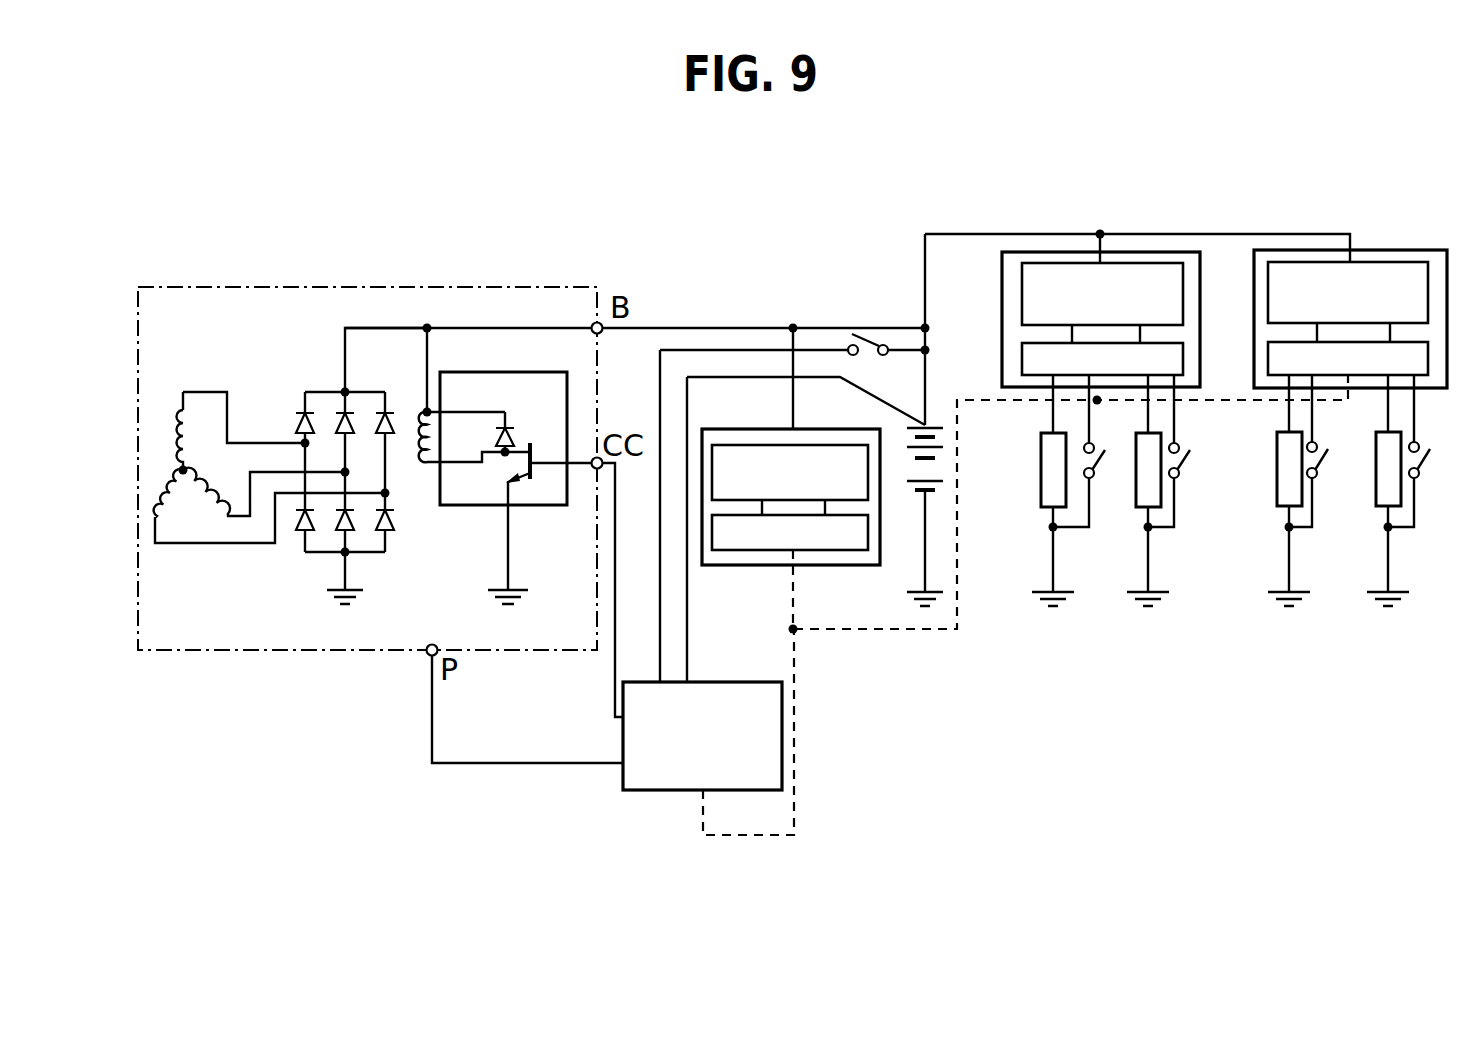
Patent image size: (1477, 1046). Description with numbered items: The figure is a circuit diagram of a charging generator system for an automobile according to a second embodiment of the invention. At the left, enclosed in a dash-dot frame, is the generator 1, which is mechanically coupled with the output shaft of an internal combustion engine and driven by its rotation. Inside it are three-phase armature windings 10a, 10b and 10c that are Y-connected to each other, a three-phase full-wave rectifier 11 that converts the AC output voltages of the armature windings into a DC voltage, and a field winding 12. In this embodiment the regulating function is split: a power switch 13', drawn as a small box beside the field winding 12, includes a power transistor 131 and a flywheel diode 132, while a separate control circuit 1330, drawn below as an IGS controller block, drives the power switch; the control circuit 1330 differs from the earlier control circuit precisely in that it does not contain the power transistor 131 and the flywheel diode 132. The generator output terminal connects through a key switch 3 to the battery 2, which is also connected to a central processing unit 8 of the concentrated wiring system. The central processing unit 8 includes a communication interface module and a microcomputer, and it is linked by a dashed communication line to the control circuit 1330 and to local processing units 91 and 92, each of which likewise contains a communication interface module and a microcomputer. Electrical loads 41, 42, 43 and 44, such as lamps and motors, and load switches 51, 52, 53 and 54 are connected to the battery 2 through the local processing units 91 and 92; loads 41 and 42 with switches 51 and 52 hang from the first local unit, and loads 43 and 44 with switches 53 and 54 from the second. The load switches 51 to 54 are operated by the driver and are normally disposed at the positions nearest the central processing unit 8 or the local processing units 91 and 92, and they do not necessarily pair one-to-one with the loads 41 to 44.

The generator 1 is at (270, 651).
The armature winding 10a is at (180, 510).
The armature winding 10b is at (215, 516).
The armature winding 10c is at (198, 422).
The three-phase full-wave rectifier 11 is at (386, 552).
The field winding 12 is at (412, 436).
The power switch 13' is at (503, 475).
The power transistor 131 is at (511, 466).
The flywheel diode 132 is at (512, 428).
The control circuit 1330 is at (683, 849).
The battery 2 is at (914, 486).
The key switch 3 is at (870, 336).
The central processing unit 8 is at (745, 566).
The local processing unit 91 is at (1070, 252).
The local processing unit 92 is at (1395, 250).
The electrical load 41 is at (1040, 496).
The electrical load 42 is at (1136, 496).
The electrical load 43 is at (1278, 496).
The electrical load 44 is at (1378, 496).
The load switch 51 is at (1103, 462).
The load switch 52 is at (1190, 462).
The load switch 53 is at (1328, 462).
The load switch 54 is at (1430, 462).